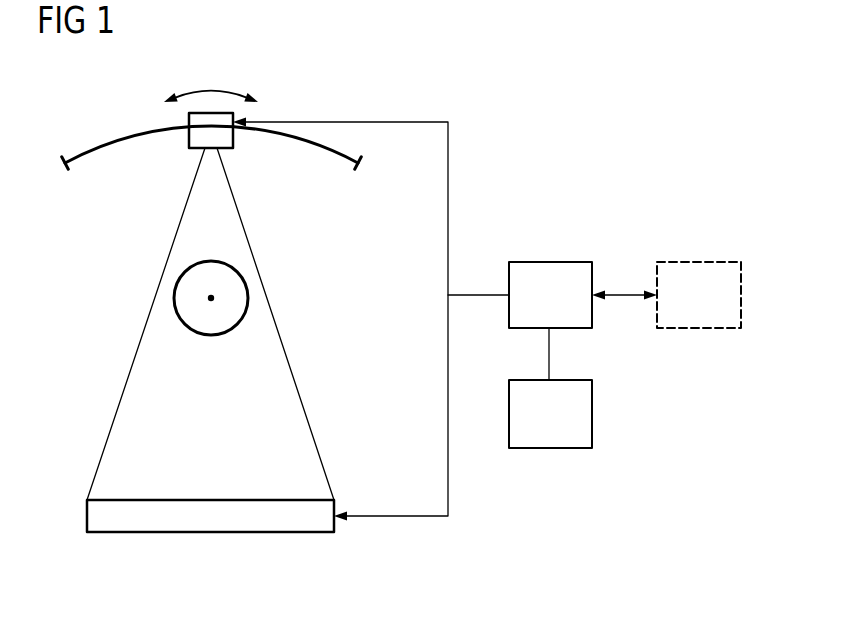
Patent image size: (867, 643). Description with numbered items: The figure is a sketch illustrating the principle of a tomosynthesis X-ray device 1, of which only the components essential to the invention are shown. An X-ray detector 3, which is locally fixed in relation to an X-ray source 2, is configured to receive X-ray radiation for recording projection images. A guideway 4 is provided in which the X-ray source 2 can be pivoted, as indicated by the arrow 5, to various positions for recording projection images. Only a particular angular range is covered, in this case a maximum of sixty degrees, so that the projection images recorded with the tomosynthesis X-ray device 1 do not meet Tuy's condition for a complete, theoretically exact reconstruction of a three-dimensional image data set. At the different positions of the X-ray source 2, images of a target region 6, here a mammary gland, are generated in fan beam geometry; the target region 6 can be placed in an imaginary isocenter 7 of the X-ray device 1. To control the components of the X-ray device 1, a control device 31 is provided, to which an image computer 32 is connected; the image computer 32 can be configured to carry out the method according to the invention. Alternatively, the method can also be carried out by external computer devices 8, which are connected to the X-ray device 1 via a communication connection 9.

The tomosynthesis X-ray device 1 is at (541, 86).
The X-ray source 2 is at (189, 123).
The X-ray detector 3 is at (208, 532).
The guideway 4 is at (95, 150).
The arrow 5 is at (213, 95).
The target region 6 is at (174, 298).
The isocenter 7 is at (226, 285).
The external computer devices 8 is at (697, 262).
The communication connection 9 is at (623, 295).
The control device 31 is at (550, 262).
The image computer 32 is at (549, 448).